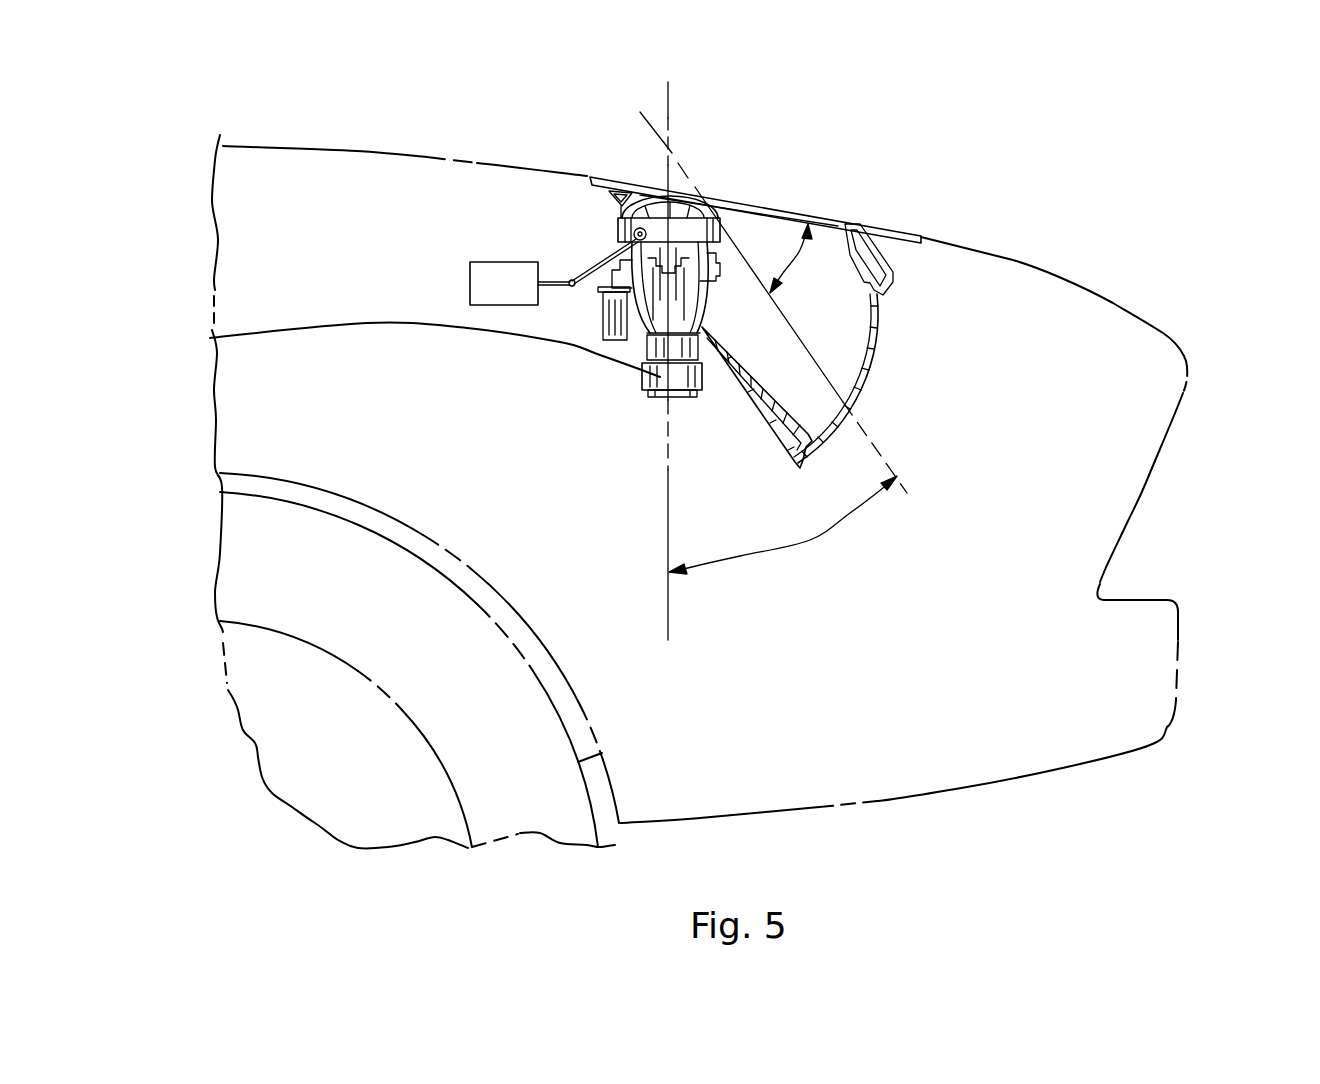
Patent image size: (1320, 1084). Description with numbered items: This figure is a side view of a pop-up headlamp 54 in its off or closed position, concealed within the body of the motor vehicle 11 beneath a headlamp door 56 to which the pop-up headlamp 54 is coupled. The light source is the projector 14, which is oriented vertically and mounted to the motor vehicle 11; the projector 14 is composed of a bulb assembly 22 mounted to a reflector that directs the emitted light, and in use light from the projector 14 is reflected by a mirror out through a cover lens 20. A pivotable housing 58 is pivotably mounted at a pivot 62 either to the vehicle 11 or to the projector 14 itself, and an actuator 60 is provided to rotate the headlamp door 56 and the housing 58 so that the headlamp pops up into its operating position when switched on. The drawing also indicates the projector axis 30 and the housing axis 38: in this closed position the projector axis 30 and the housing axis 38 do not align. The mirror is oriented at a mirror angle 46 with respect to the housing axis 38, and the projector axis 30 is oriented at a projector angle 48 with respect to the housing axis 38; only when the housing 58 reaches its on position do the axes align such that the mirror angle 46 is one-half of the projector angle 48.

The motor vehicle 11 is at (1167, 330).
The projector 14 is at (593, 223).
The cover lens 20 is at (973, 308).
The bulb assembly 22 is at (210, 338).
The projector axis 30 is at (672, 118).
The housing axis 38 is at (890, 458).
The mirror angle 46 is at (813, 260).
The projector angle 48 is at (800, 532).
The pop-up headlamp 54 is at (755, 151).
The headlamp door 56 is at (720, 198).
The pivotable housing 58 is at (890, 283).
The actuator 60 is at (467, 278).
The pivot 62 is at (705, 328).